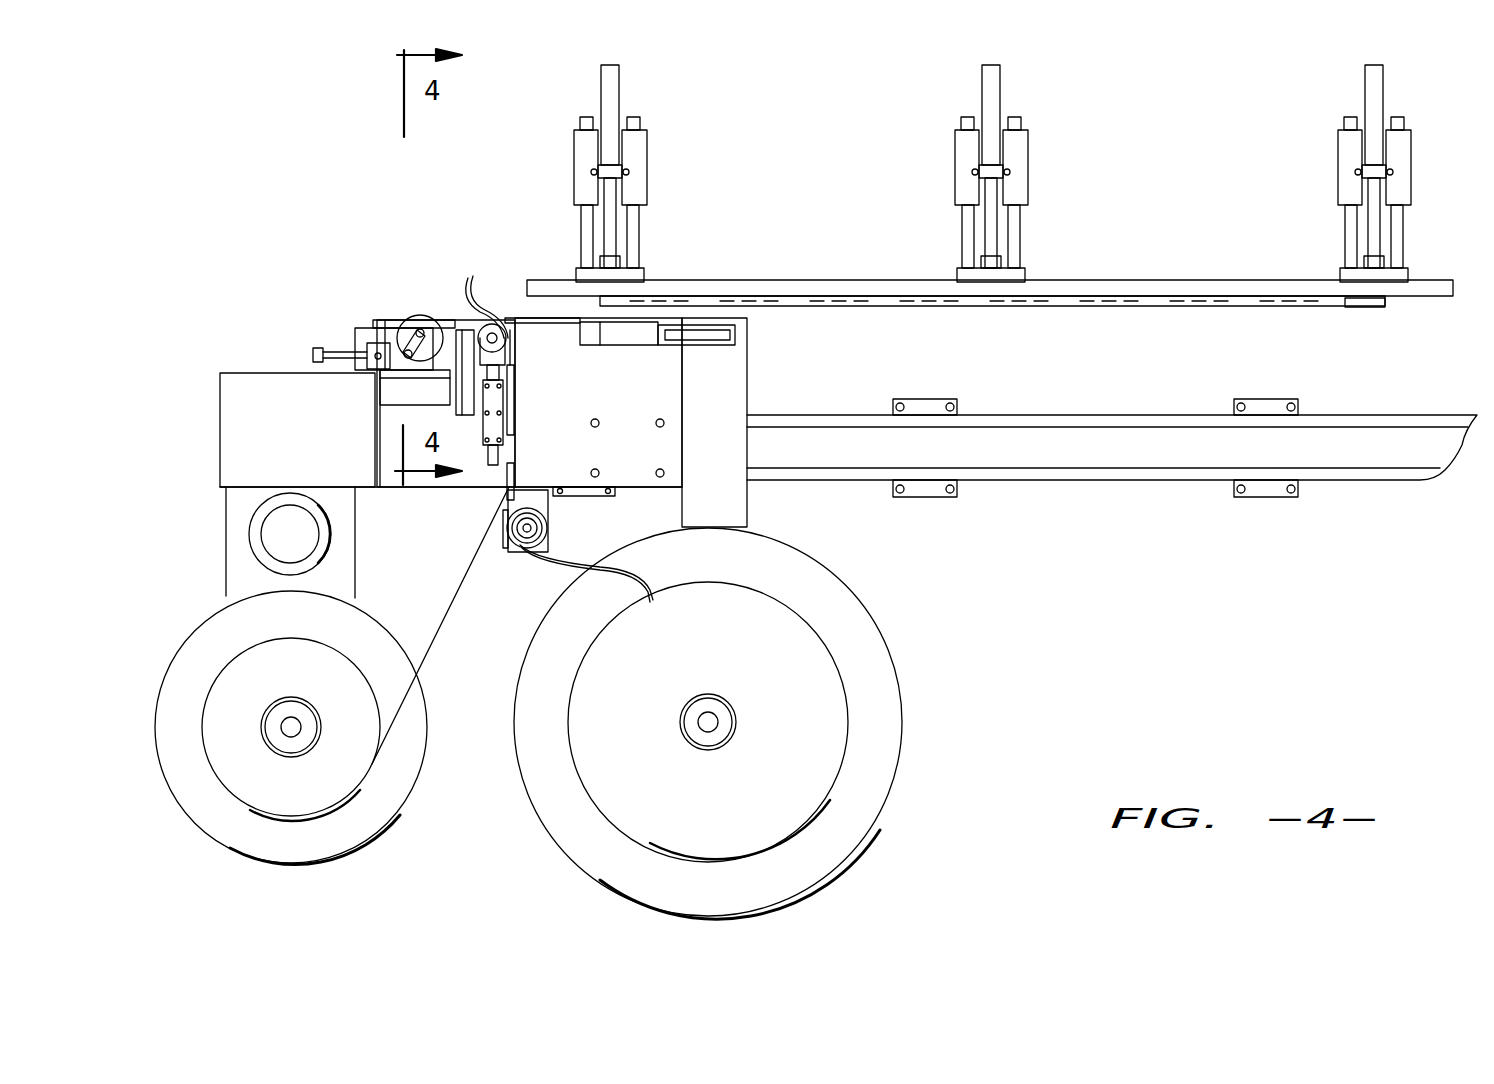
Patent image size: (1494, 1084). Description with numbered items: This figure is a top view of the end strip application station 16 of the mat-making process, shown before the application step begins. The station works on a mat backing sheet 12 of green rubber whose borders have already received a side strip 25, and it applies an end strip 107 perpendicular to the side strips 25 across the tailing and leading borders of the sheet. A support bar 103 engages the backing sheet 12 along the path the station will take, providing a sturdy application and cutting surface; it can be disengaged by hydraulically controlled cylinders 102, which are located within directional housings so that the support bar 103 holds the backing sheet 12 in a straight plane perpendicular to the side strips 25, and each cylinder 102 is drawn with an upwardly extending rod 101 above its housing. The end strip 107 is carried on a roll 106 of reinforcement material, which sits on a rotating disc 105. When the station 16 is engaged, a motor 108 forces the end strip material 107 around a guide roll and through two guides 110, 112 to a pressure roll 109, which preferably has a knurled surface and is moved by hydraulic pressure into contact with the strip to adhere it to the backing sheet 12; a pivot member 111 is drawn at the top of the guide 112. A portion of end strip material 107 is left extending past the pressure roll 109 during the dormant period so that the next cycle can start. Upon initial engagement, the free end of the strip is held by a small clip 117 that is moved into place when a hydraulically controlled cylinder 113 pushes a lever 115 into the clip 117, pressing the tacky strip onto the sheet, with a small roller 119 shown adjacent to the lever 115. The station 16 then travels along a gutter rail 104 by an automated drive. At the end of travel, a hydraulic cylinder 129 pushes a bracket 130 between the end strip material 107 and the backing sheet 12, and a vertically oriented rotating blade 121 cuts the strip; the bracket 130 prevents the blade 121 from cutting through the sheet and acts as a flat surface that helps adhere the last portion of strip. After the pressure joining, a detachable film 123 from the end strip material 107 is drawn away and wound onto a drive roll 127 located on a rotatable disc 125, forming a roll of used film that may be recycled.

The end strip application station 16 is at (325, 237).
The mat backing sheet 12 is at (1075, 306).
The side strip 25 is at (1360, 306).
The cylinder rod 101 is at (621, 97).
The hydraulically controlled cylinders 102 is at (648, 168).
The support bar 103 is at (735, 280).
The gutter rail 104 is at (1045, 482).
The rotating disc 105 is at (877, 695).
The roll of reinforcement material 106 is at (720, 730).
The end strip 107 is at (557, 557).
The motor 108 is at (268, 536).
The pressure roll 109 is at (530, 543).
The guide 110 is at (518, 482).
The cylinder pivot 111 is at (492, 322).
The guide 112 is at (518, 405).
The hydraulically controlled cylinder 113 is at (318, 352).
The lever 115 is at (400, 345).
The clip 117 is at (410, 400).
The roller 119 is at (415, 318).
The vertically oriented rotating blade 121 is at (465, 330).
The detachable film 123 is at (440, 607).
The rotatable disc 125 is at (378, 798).
The drive roll 127 is at (262, 718).
The hydraulic cylinder 129 is at (650, 322).
The bracket 130 is at (512, 300).